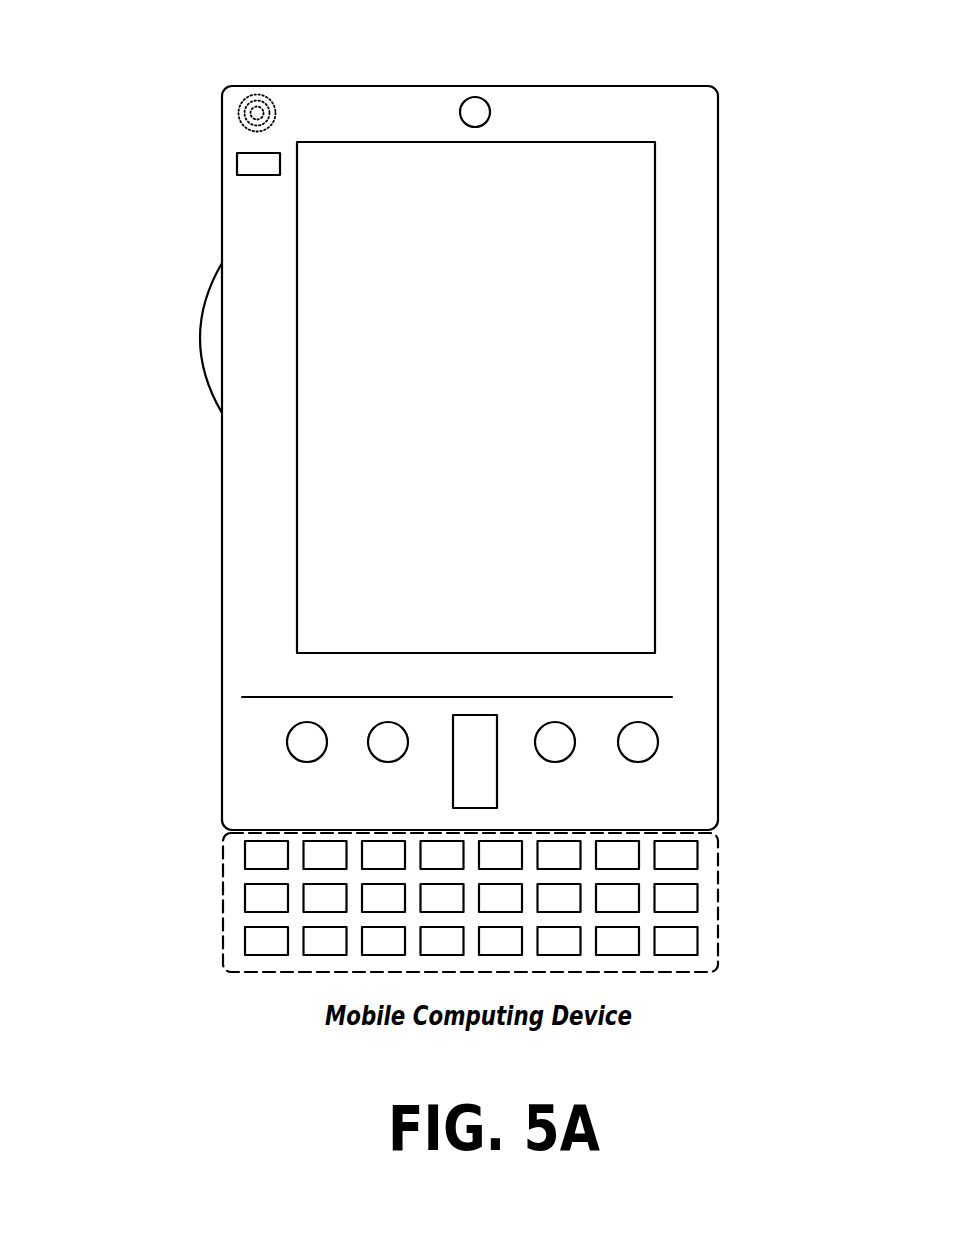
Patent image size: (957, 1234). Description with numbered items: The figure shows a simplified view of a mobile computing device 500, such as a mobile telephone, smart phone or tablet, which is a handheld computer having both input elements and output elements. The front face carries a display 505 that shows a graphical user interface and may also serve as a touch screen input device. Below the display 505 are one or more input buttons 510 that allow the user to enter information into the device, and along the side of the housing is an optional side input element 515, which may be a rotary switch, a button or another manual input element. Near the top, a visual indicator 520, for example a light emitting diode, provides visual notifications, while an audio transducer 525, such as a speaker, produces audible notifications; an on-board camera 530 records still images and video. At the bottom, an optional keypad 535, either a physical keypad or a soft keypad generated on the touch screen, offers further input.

The mobile computing device 500 is at (706, 106).
The display 505 is at (407, 566).
The input buttons 510 is at (475, 768).
The side input element 515 is at (213, 337).
The visual indicator 520 is at (239, 167).
The audio transducer 525 is at (237, 115).
The on-board camera 530 is at (489, 108).
The keypad 535 is at (232, 946).